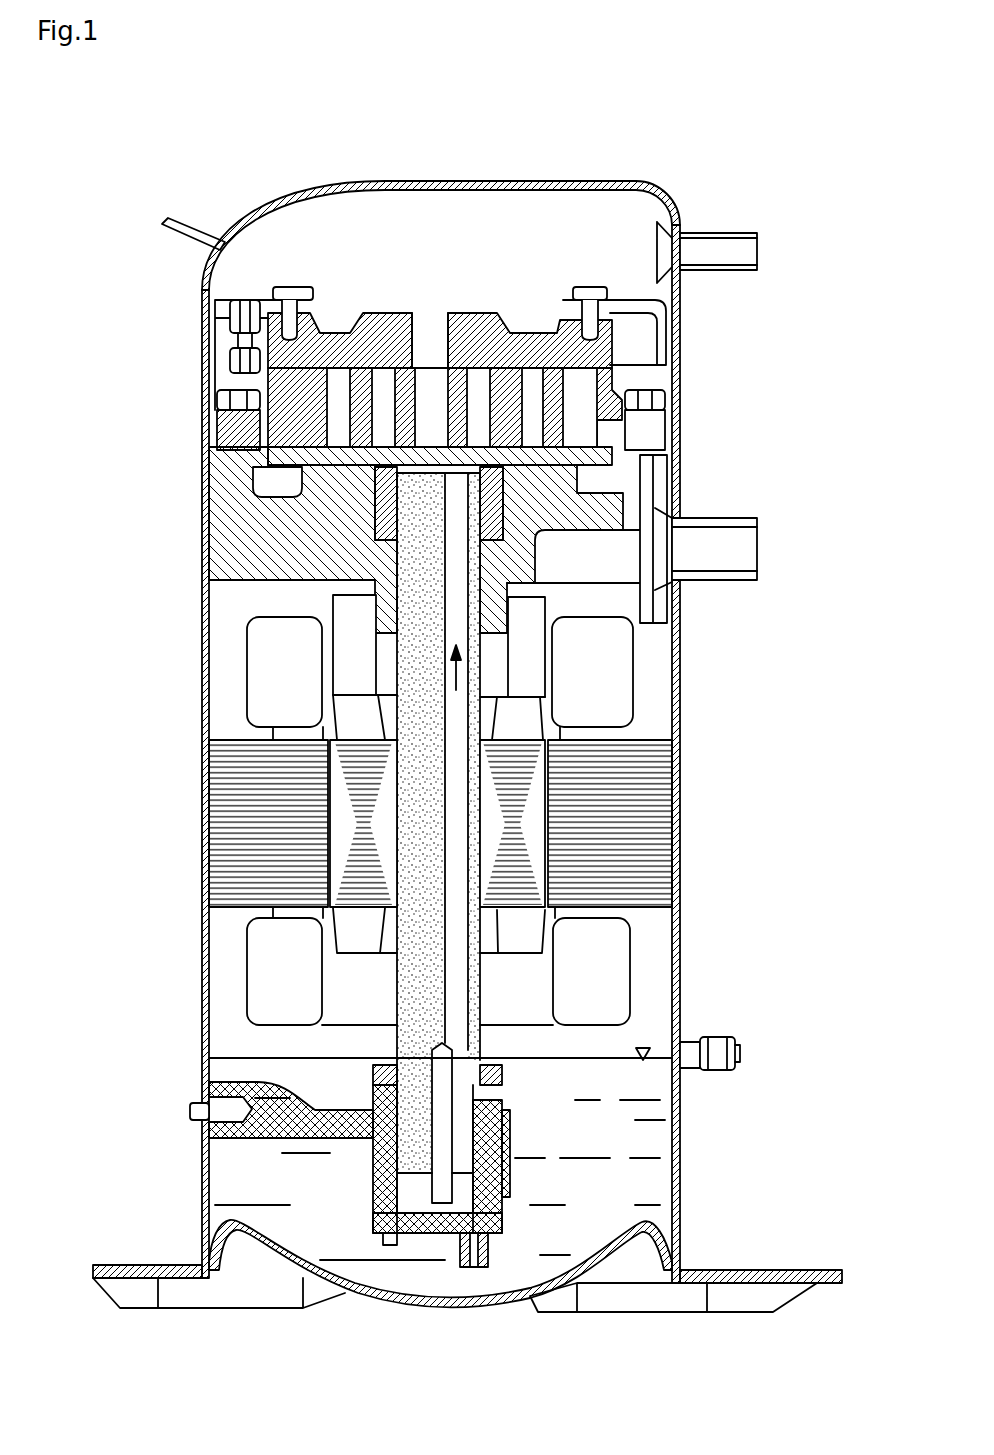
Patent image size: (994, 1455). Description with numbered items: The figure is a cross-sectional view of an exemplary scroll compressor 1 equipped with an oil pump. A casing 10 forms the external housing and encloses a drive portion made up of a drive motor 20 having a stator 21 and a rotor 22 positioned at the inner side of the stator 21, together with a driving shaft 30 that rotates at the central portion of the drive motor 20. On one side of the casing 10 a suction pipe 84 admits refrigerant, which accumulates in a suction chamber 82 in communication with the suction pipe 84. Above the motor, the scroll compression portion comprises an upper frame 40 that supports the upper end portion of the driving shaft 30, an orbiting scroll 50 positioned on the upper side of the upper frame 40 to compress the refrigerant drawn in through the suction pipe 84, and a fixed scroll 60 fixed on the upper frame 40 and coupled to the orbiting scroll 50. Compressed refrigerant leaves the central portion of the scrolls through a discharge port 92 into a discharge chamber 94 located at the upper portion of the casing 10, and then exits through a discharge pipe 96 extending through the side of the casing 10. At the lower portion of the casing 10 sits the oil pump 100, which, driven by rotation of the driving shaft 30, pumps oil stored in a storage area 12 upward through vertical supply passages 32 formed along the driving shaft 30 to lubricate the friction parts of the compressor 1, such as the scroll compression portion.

The scroll compressor 1 is at (120, 182).
The casing 10 is at (680, 658).
The storage area 12 is at (650, 1025).
The drive motor 20 is at (757, 790).
The stator 21 is at (635, 833).
The rotor 22 is at (535, 800).
The driving shaft 30 is at (420, 857).
The vertical supply passage 32 is at (457, 933).
The upper frame 40 is at (228, 538).
The orbiting scroll 50 is at (335, 455).
The fixed scroll 60 is at (365, 310).
The suction chamber 82 is at (628, 555).
The suction pipe 84 is at (750, 545).
The discharge port 92 is at (428, 318).
The discharge chamber 94 is at (520, 204).
The discharge pipe 96 is at (718, 248).
The oil pump 100 is at (350, 1195).